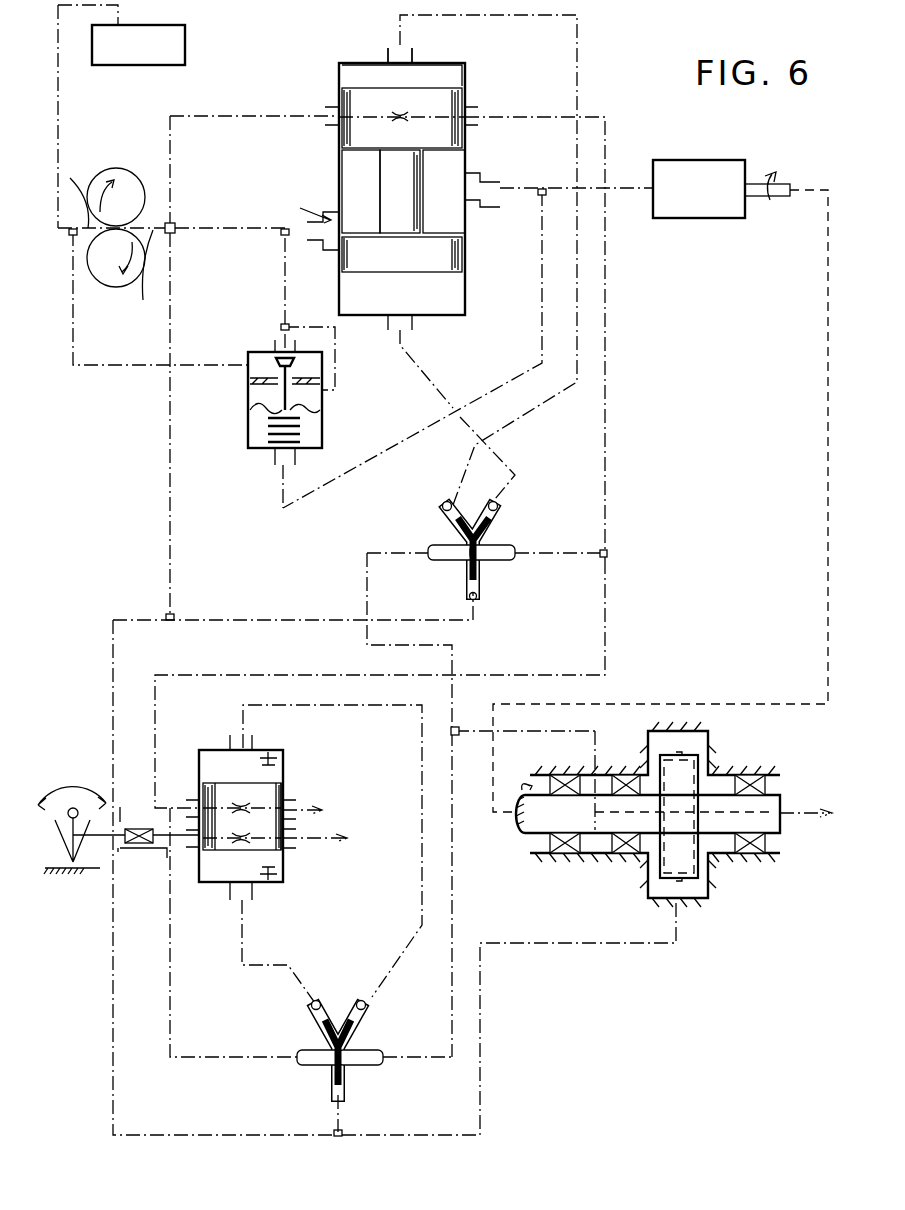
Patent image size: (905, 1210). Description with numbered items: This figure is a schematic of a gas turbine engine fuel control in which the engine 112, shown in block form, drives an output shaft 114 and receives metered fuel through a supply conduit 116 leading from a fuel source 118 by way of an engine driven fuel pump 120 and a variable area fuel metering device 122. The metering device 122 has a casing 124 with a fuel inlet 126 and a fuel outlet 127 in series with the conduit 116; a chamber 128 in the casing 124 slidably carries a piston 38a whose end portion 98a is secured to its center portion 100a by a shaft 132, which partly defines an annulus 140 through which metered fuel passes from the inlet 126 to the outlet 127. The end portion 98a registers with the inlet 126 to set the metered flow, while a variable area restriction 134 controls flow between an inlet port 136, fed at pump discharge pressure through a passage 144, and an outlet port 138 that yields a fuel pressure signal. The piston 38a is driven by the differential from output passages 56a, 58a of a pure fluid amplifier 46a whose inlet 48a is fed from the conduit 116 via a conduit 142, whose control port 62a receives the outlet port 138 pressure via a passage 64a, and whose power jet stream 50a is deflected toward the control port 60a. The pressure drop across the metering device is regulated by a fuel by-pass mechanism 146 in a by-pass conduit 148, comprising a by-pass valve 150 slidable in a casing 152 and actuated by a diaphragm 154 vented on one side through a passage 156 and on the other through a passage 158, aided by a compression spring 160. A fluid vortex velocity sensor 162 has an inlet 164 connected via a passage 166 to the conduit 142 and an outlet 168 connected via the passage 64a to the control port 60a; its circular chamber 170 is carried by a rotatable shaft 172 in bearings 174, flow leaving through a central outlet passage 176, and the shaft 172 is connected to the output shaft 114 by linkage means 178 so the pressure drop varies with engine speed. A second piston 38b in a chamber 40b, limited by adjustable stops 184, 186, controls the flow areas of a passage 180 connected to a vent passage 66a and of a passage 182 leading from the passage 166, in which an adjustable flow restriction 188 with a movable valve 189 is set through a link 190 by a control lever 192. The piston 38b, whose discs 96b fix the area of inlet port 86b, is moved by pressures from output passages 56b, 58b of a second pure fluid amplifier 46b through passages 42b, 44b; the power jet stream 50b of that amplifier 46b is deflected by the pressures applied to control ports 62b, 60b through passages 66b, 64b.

The piston 38a is at (334, 66).
The piston 38b is at (220, 770).
The chamber 40b is at (284, 780).
The passage 42b is at (430, 382).
The passage 44b is at (557, 397).
The pure fluid amplifier 46a is at (479, 539).
The pure fluid amplifier 46b is at (351, 1039).
The inlet 48a is at (480, 598).
The power jet stream 50a is at (492, 545).
The valve body 50b is at (348, 1080).
The output passage 56a is at (450, 503).
The output passage 56b is at (318, 1000).
The output passage 58a is at (498, 502).
The output passage 58b is at (366, 1002).
The control port 60a is at (456, 562).
The control port 60b is at (320, 1067).
The control port 62a is at (492, 560).
The control port 62b is at (365, 1048).
The passage 64a is at (470, 730).
The passage 64b is at (172, 1030).
The vent passage 66a is at (604, 508).
The passage 66b is at (452, 927).
The inlet port 86b is at (205, 805).
The variable area discs 96b is at (260, 810).
The end portion 98a is at (414, 271).
The piston section 100a is at (400, 146).
The gas turbine engine 112 is at (720, 196).
The output shaft 114 is at (780, 196).
The supply conduit 116 is at (70, 116).
The fuel source 118 is at (160, 55).
The engine driven fuel pump 120 is at (125, 180).
The variable area fuel metering device 122 is at (329, 202).
The casing 124 is at (362, 62).
The fuel inlet 126 is at (336, 252).
The fuel outlet 127 is at (488, 172).
The chamber 128 is at (462, 72).
The shaft 132 is at (415, 202).
The variable area restriction 134 is at (405, 106).
The inlet port 136 is at (344, 100).
The outlet port 138 is at (468, 106).
The annulus 140 is at (375, 190).
The conduit 142 is at (172, 606).
The passage 144 is at (178, 118).
The fuel by-pass mechanism 146 is at (244, 434).
The fuel by-pass conduit 148 is at (283, 255).
The variable area fuel by-pass valve 150 is at (282, 355).
The casing 152 is at (248, 390).
The diaphragm 154 is at (323, 415).
The passage 156 is at (336, 366).
The passage 158 is at (305, 500).
The compression spring 160 is at (278, 466).
The engine velocity sensor 162 is at (730, 766).
The inlet 164 is at (692, 896).
The passage 166 is at (113, 642).
The outlet 168 is at (578, 768).
The circular chamber 170 is at (708, 733).
The rotatable shaft 172 is at (580, 825).
The bearings 174 is at (625, 770).
The outlet passage 176 is at (615, 856).
The linkage means 178 is at (825, 385).
The passage 180 is at (606, 632).
The passage 182 is at (172, 890).
The adjustable stop 184 is at (270, 752).
The adjustable stop 186 is at (275, 878).
The adjustable flow restriction 188 is at (150, 850).
The movable valve 189 is at (140, 828).
The link 190 is at (100, 870).
The movable control lever 192 is at (40, 815).